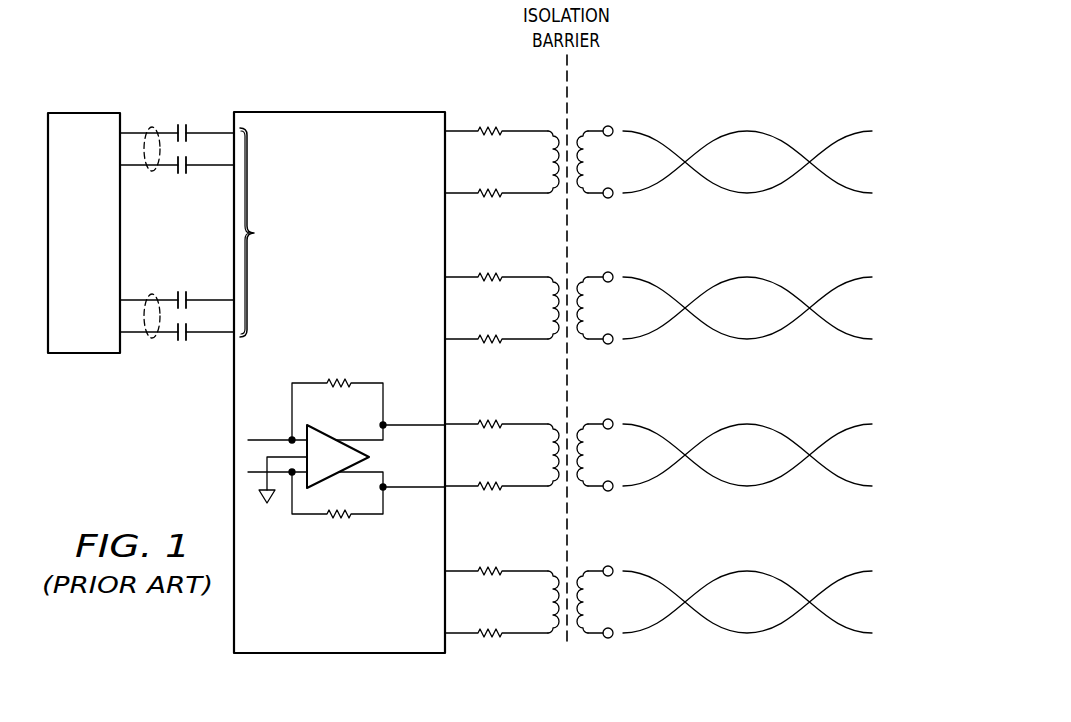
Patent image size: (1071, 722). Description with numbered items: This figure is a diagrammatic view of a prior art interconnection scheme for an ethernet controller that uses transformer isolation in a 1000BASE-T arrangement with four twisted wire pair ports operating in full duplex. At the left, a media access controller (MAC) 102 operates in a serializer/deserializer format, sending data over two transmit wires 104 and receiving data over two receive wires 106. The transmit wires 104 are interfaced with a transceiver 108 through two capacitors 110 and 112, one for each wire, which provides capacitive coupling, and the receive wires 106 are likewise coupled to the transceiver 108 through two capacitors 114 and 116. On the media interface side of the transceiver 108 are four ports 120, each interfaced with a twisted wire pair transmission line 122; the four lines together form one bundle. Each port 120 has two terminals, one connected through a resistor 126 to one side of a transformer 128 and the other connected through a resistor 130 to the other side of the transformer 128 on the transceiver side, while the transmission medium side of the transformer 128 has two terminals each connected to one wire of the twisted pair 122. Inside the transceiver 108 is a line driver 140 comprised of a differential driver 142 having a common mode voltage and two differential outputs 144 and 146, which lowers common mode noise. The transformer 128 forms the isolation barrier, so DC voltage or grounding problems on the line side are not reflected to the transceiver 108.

The media access controller (MAC) 102 is at (83, 112).
The transmit wires 104 is at (150, 126).
The receive wires 106 is at (150, 341).
The transceiver 108 is at (339, 112).
The capacitor 110 is at (183, 124).
The capacitor 112 is at (182, 175).
The capacitor 114 is at (182, 342).
The capacitor 116 is at (180, 290).
The port 120 is at (513, 118).
The twisted wire pair transmission line 122 is at (748, 130).
The resistor 126 is at (487, 128).
The transformer 128 is at (573, 118).
The resistor 130 is at (481, 191).
The line driver 140 is at (333, 530).
The differential driver 142 is at (347, 419).
The differential output 144 is at (398, 423).
The differential output 146 is at (399, 488).